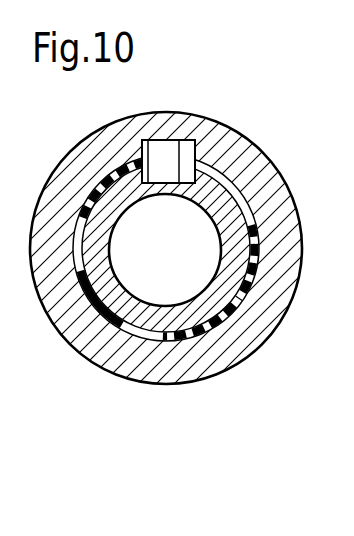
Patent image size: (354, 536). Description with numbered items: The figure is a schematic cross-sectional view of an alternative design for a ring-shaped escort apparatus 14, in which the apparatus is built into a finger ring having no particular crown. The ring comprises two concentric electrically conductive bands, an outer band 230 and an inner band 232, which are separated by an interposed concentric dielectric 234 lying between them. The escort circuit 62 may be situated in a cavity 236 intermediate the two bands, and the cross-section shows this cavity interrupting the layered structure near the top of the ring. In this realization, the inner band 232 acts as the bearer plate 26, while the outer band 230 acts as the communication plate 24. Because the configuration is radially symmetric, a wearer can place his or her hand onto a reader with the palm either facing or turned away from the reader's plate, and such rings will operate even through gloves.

The escort apparatus 14 is at (248, 78).
The communication plate 24 is at (328, 253).
The bearer plate 26 is at (217, 263).
The escort circuit 62 is at (208, 122).
The outer band 230 is at (243, 338).
The inner band 232 is at (218, 292).
The dielectric 234 is at (253, 205).
The cavity 236 is at (188, 151).